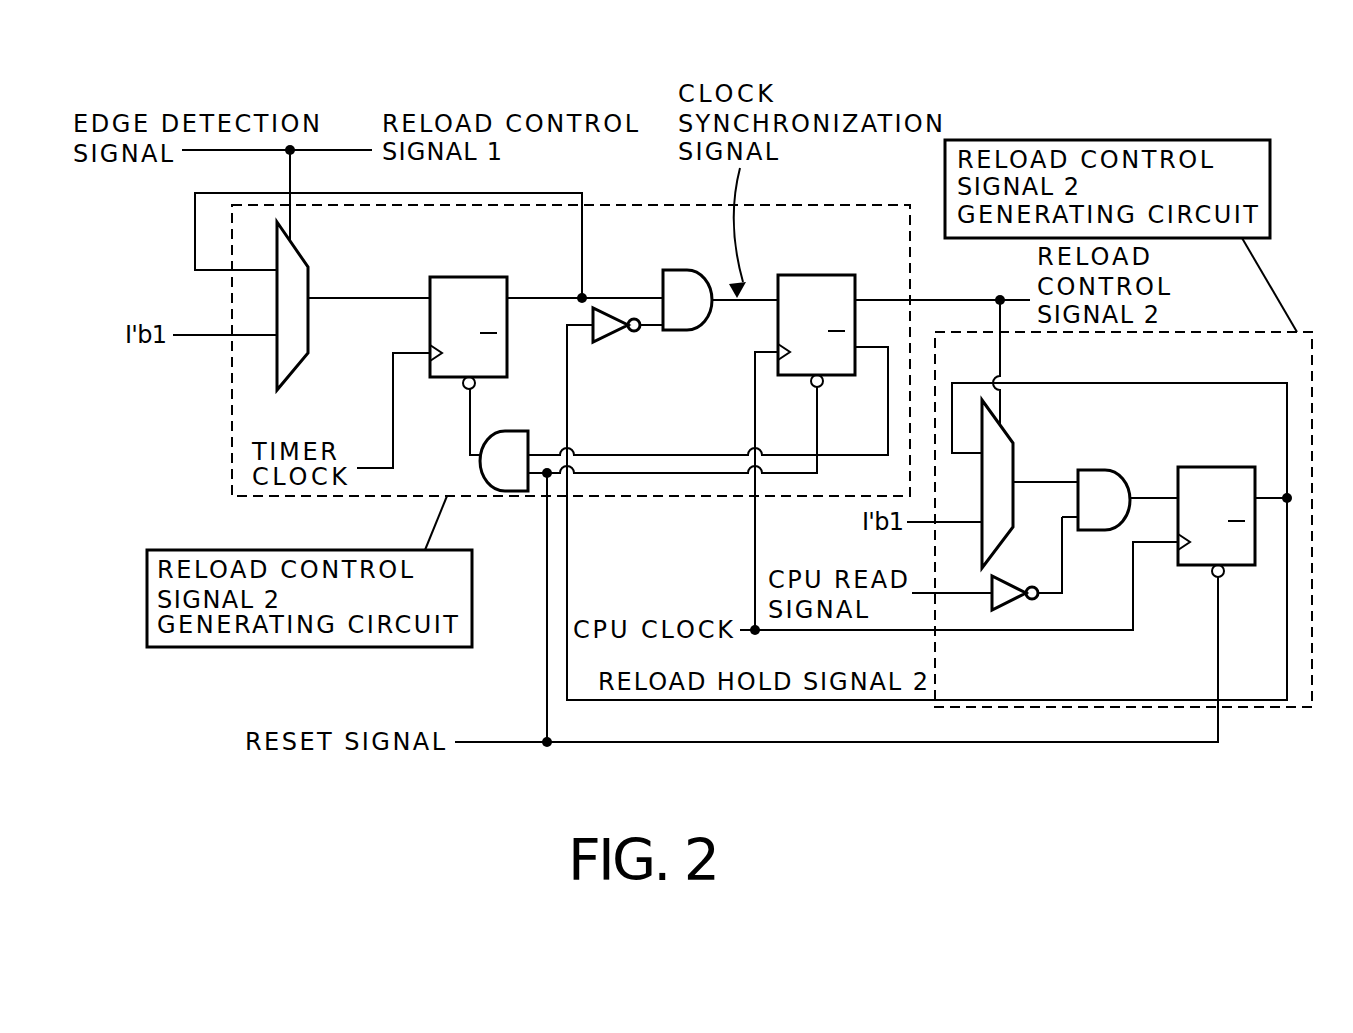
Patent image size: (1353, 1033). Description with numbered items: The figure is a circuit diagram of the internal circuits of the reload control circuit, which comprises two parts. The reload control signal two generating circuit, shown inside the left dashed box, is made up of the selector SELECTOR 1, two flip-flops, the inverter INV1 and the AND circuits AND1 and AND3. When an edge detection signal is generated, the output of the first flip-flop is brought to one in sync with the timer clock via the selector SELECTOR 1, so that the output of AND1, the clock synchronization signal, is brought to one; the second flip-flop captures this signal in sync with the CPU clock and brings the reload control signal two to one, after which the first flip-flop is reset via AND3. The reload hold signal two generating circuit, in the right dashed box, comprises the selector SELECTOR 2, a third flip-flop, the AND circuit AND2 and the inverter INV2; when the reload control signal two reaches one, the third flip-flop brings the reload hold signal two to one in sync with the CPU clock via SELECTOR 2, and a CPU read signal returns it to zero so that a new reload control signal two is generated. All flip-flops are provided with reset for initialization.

The selector SELECTOR 1 is at (373, 302).
The selector SELECTOR 2 is at (1081, 484).
The AND circuit AND1 is at (684, 286).
The AND circuit AND2 is at (1098, 486).
The AND circuit AND3 is at (517, 445).
The inverter INV1 is at (623, 340).
The inverter INV2 is at (1024, 583).